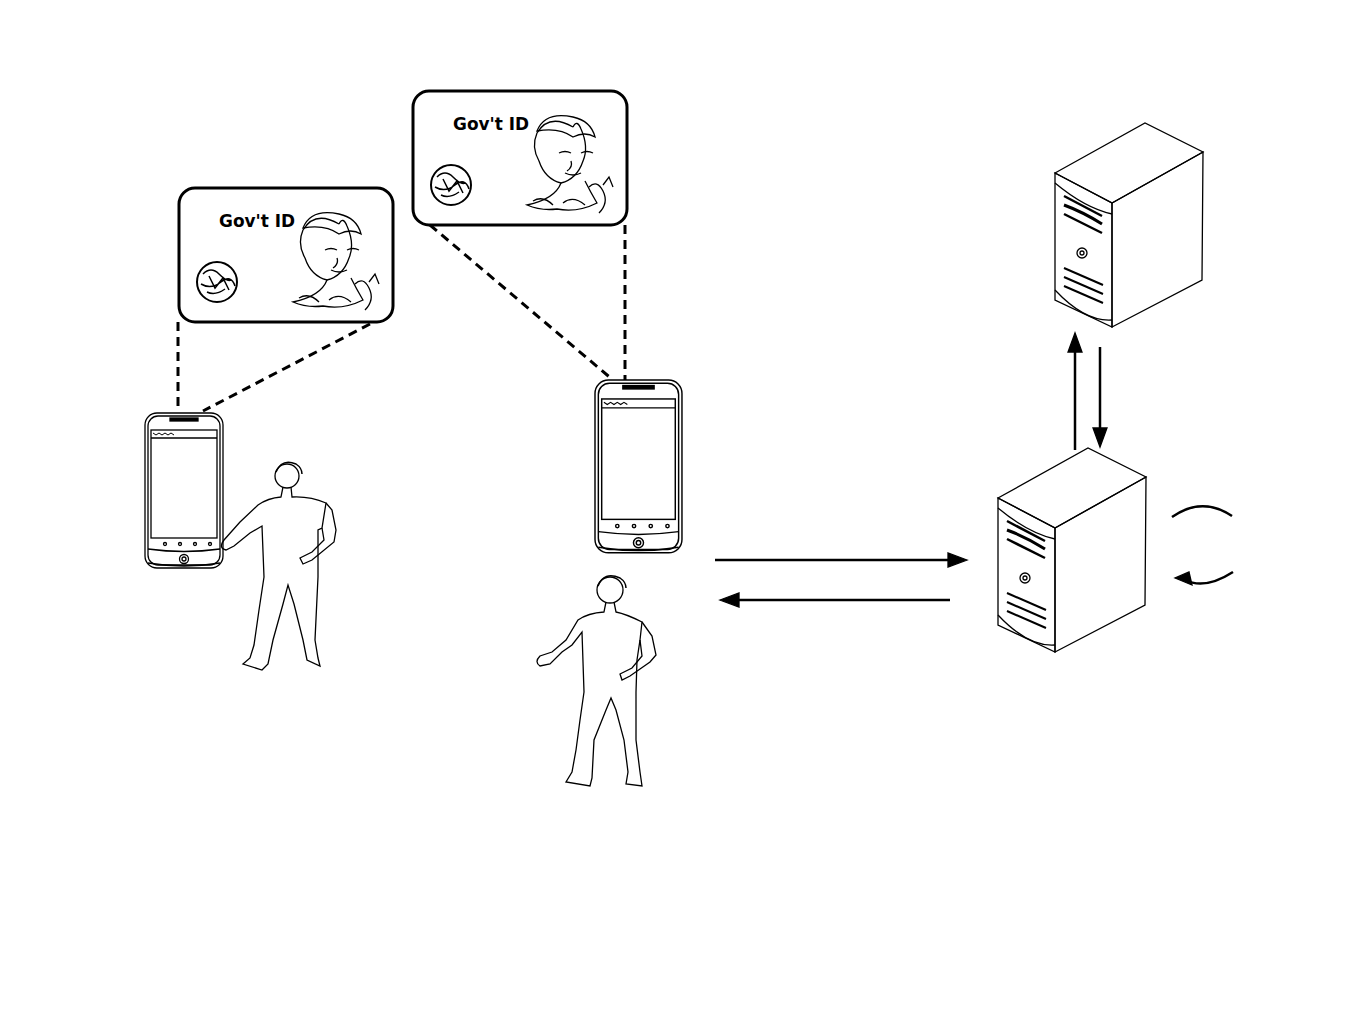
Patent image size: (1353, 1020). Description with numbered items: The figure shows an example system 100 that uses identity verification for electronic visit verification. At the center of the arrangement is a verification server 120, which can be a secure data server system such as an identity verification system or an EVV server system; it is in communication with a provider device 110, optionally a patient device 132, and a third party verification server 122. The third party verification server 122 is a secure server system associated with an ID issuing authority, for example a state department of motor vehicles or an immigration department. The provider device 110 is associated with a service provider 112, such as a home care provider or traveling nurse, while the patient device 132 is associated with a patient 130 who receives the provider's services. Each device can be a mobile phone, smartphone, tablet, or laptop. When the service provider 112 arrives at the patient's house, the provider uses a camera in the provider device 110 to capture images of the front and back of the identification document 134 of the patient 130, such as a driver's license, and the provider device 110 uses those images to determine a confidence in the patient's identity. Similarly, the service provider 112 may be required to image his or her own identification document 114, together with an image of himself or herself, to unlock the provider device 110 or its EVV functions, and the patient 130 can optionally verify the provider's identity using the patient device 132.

The system 100 is at (212, 72).
The provider device 110 is at (818, 510).
The service provider 112 is at (686, 849).
The provider's identification document 114 is at (245, 190).
The verification server 120 is at (1095, 738).
The third party verification server 122 is at (1198, 113).
The patient 130 is at (361, 709).
The patient device 132 is at (233, 636).
The identification document 134 is at (625, 152).